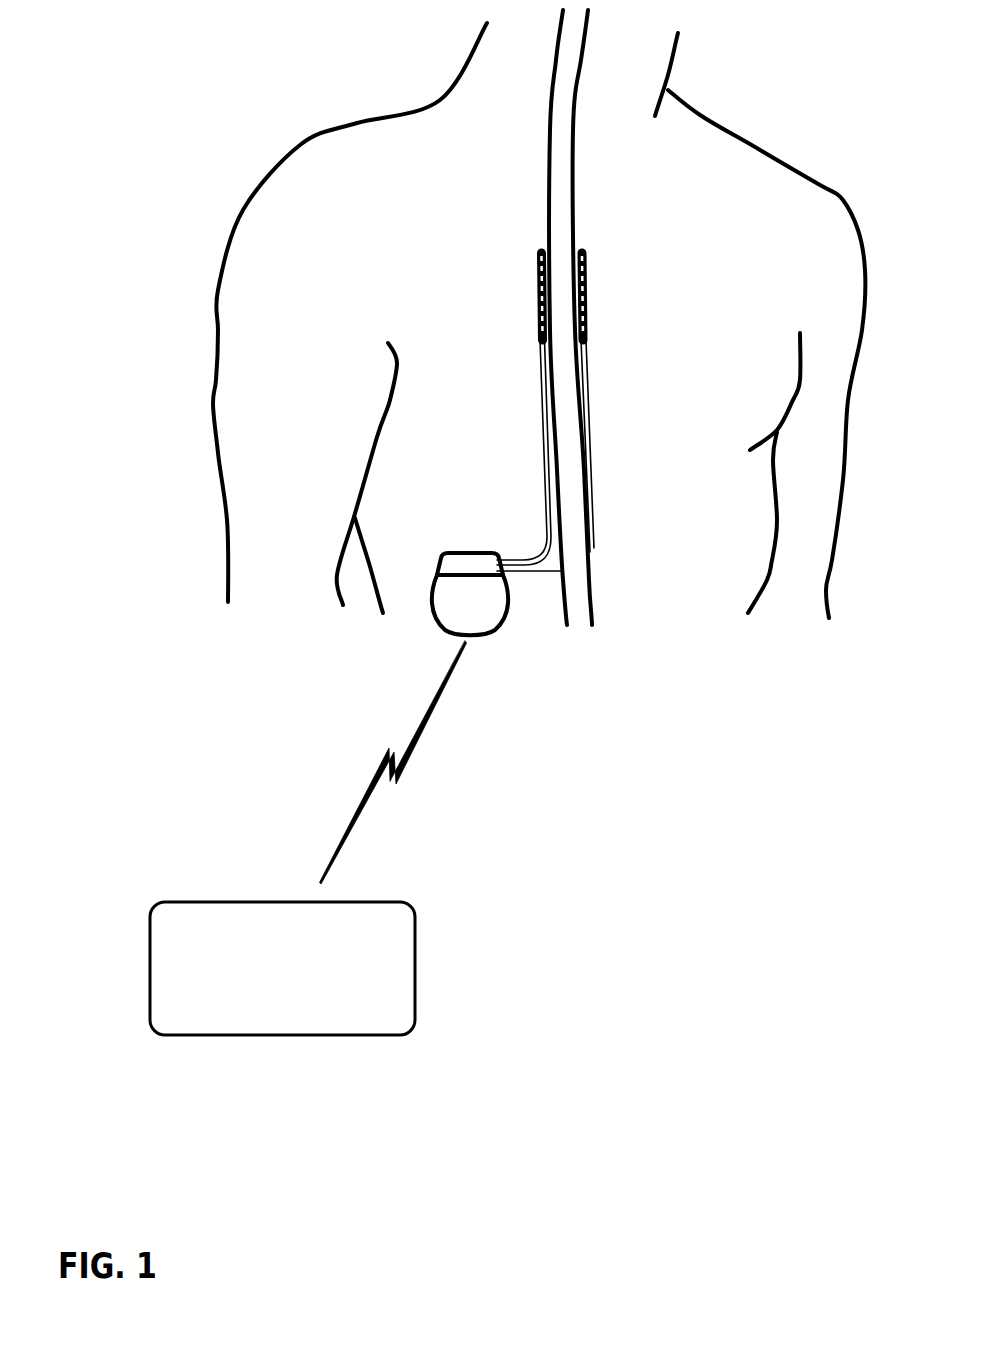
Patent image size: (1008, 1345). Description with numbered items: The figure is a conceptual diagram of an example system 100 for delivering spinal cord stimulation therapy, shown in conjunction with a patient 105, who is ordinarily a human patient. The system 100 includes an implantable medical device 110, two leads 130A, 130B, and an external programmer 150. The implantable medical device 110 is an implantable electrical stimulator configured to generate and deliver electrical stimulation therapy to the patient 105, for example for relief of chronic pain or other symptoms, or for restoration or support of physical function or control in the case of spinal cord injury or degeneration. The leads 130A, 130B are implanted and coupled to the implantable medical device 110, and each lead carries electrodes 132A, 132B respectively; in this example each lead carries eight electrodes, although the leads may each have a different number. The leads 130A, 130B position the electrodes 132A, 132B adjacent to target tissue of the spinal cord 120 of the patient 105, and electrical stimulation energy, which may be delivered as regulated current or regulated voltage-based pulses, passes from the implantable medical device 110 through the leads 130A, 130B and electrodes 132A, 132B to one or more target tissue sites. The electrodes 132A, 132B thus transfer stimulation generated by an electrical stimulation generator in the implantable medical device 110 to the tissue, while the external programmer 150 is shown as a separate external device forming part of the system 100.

The system 100 is at (163, 78).
The patient 105 is at (765, 147).
The implantable medical device 110 is at (462, 552).
The spinal cord 120 is at (575, 157).
The lead 130A is at (542, 362).
The lead 130B is at (587, 362).
The electrodes 132A is at (521, 300).
The electrodes 132B is at (609, 300).
The external programmer 150 is at (263, 1008).